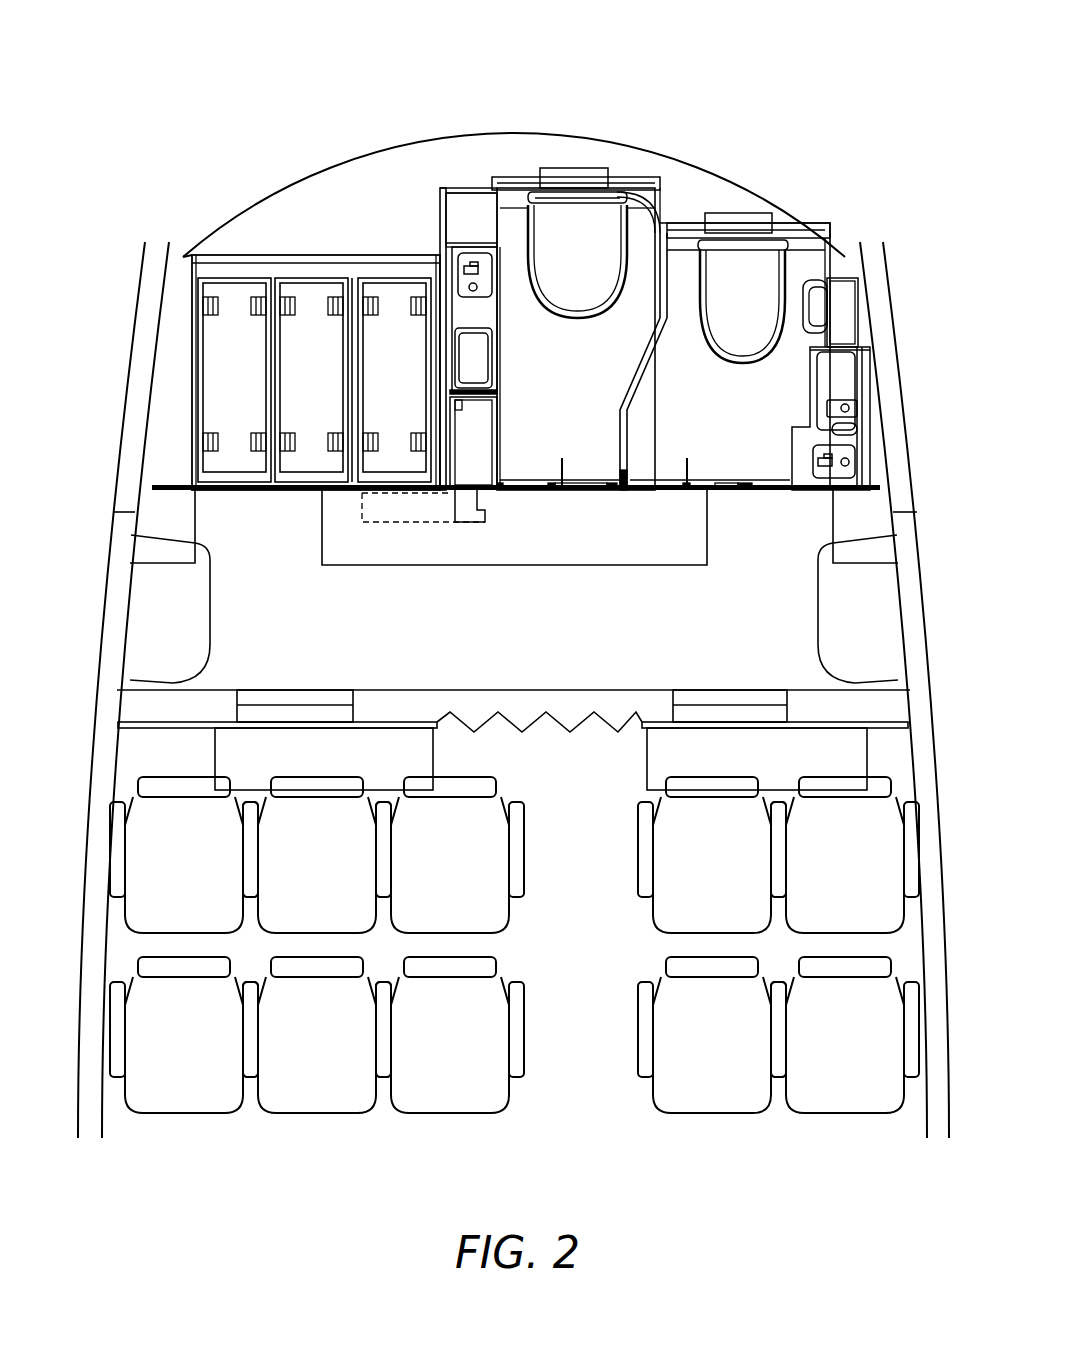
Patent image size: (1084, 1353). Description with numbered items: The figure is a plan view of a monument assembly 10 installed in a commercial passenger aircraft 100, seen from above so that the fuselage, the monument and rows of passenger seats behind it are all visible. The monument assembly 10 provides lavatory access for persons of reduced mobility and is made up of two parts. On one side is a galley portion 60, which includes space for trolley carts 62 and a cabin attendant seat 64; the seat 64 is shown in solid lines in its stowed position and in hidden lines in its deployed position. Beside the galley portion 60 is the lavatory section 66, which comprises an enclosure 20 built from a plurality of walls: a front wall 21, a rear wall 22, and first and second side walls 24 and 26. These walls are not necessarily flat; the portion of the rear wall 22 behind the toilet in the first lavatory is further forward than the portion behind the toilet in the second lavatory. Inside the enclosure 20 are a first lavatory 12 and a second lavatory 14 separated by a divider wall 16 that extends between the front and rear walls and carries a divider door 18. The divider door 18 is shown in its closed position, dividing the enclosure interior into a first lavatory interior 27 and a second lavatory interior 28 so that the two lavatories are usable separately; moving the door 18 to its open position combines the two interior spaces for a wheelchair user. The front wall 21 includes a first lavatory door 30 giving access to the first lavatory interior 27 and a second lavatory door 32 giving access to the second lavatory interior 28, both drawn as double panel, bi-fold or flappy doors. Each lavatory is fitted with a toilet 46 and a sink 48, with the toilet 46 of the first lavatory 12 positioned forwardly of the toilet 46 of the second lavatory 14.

The commercial passenger aircraft 100 is at (130, 357).
The monument assembly 10 is at (298, 223).
The lavatory section 66 is at (621, 133).
The rear wall 22 is at (517, 178).
The divider wall 16 is at (662, 272).
The enclosure 20 is at (835, 215).
The second side wall 26 is at (437, 277).
The first side wall 24 is at (857, 313).
The sink 48 is at (482, 313).
The toilet 46 is at (592, 272).
The trolley cart 62 is at (249, 386).
The galley portion 60 is at (290, 512).
The divider door 18 is at (640, 363).
The second lavatory interior 28 is at (574, 420).
The first lavatory interior 27 is at (727, 432).
The front wall 21 is at (765, 490).
The first lavatory door 30 is at (718, 490).
The second lavatory door 32 is at (587, 490).
The first lavatory 12 is at (562, 490).
The second lavatory 14 is at (687, 490).
The cabin attendant seat 64 is at (467, 465).